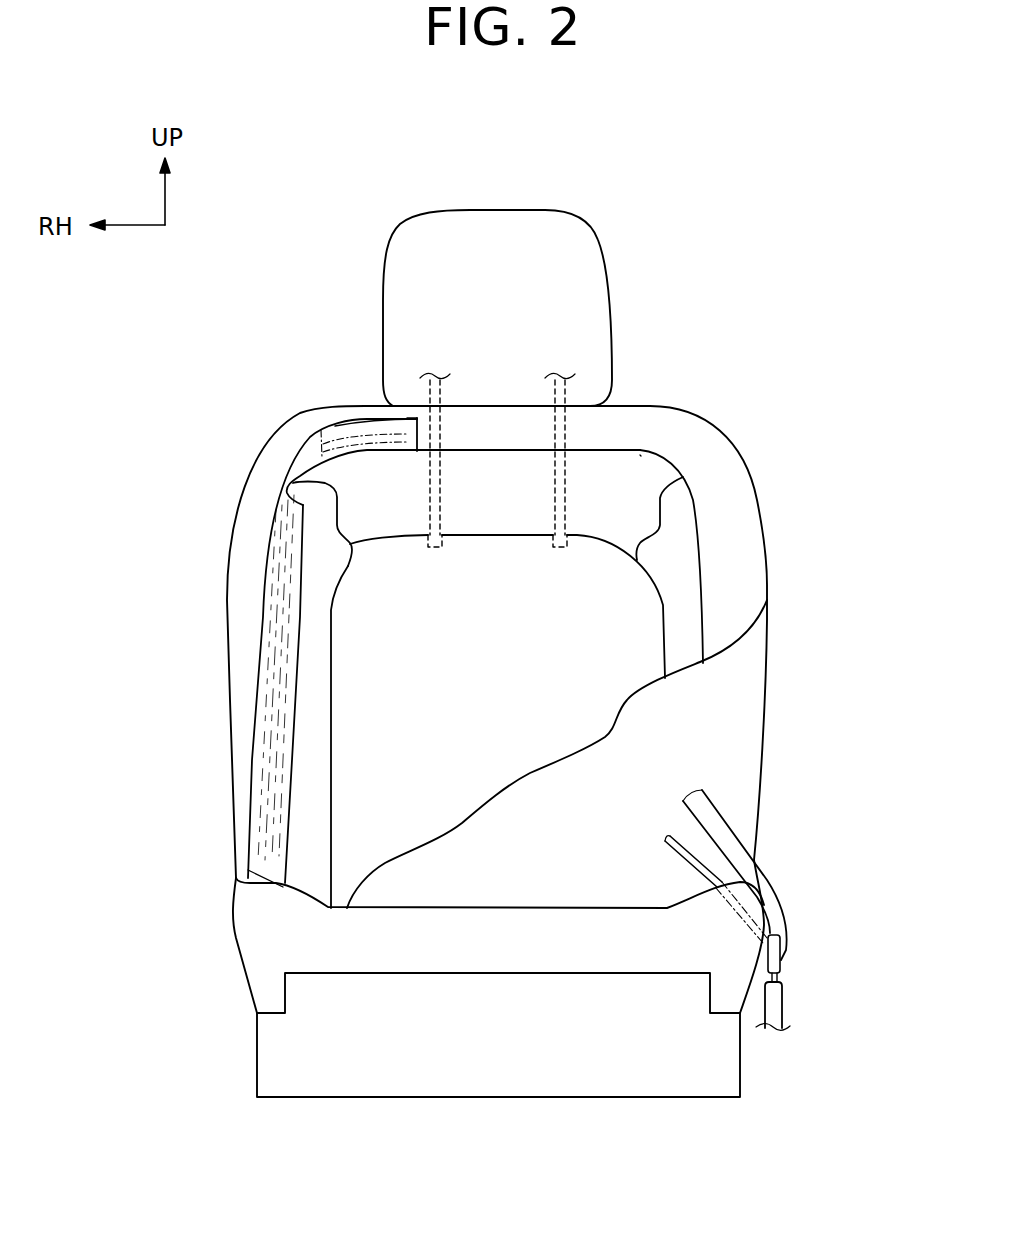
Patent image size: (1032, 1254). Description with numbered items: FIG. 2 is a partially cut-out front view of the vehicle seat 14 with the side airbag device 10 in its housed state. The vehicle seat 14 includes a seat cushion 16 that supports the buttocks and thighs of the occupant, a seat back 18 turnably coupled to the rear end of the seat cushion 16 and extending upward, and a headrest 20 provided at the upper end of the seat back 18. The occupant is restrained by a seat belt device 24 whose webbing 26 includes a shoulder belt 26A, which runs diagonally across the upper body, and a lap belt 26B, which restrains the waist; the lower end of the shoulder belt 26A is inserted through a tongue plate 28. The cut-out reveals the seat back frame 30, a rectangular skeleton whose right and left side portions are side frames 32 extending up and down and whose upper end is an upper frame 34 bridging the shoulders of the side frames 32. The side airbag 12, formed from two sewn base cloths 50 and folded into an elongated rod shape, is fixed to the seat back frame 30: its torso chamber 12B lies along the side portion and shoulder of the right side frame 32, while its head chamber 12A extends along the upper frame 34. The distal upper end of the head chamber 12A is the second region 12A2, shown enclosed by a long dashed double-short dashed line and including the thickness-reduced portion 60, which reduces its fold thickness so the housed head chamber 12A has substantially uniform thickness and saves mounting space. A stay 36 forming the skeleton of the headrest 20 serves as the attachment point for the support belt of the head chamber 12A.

The side airbag device 10 is at (207, 488).
The side airbag 12 is at (248, 762).
The head chamber 12A is at (287, 470).
The second region 12A2 is at (355, 416).
The torso chamber 12B is at (248, 674).
The vehicle seat 14 is at (237, 985).
The seat cushion 16 is at (245, 913).
The seat back 18 is at (768, 714).
The headrest 20 is at (612, 292).
The seat belt device 24 is at (800, 1008).
The webbing 26 is at (740, 829).
The shoulder belt 26A is at (772, 882).
The lap belt 26B is at (692, 868).
The tongue plate 28 is at (783, 957).
The seat back frame 30 is at (692, 478).
The side frame 32 is at (683, 607).
The upper frame 34 is at (616, 481).
The stay 36 is at (488, 428).
The base cloth 50 is at (262, 833).
The thickness-reduced portion 60 is at (382, 435).